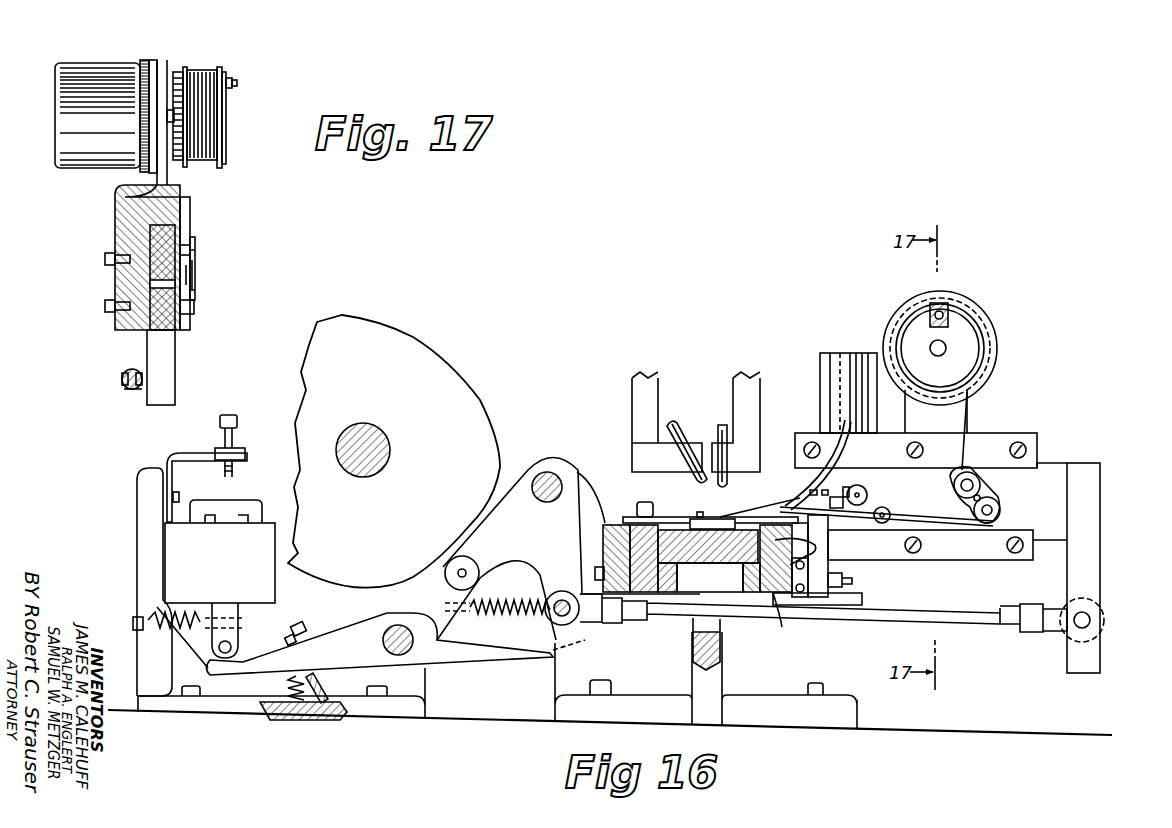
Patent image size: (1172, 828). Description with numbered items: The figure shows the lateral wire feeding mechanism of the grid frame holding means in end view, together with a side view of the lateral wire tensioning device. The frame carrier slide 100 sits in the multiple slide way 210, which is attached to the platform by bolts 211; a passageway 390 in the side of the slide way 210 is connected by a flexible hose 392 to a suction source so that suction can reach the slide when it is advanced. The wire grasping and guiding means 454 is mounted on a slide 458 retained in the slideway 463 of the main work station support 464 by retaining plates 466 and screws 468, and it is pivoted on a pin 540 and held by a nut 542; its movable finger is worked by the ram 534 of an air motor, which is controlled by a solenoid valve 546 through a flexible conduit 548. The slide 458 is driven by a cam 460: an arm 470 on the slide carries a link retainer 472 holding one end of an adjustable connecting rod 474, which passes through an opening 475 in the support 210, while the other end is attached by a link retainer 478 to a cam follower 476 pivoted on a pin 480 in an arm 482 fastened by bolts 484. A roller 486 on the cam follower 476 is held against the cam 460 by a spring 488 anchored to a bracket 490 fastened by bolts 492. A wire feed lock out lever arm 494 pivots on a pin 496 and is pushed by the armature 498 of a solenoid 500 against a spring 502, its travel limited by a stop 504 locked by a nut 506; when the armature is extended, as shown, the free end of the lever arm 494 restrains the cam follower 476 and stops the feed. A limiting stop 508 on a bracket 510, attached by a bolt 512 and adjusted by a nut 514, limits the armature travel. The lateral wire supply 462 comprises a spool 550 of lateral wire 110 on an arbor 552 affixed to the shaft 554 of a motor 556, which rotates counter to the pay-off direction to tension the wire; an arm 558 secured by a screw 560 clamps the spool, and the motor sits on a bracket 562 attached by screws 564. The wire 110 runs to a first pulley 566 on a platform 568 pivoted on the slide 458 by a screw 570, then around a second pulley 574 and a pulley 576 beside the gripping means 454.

In FIG. 16, the frame carrier slide 100 is at (729, 567).
In FIG. 17, the lateral wire 110 is at (196, 240).
In FIG. 16, the lateral wire 110 is at (981, 431).
In FIG. 16, the multiple slide way 210 is at (794, 617).
In FIG. 16, the bolts 211 is at (818, 685).
In FIG. 16, the passageway 390 is at (812, 555).
In FIG. 16, the flexible hose 392 is at (838, 560).
In FIG. 16, the wire grasping and guiding means 454 is at (776, 475).
In FIG. 17, the slide 458 is at (177, 232).
In FIG. 16, the slide 458 is at (1060, 462).
In FIG. 16, the cam 460 is at (394, 451).
In FIG. 17, the lateral wire supply 462 is at (206, 64).
In FIG. 16, the lateral wire supply 462 is at (990, 312).
In FIG. 17, the slideway 463 is at (167, 196).
In FIG. 16, the main work station support 464 is at (868, 635).
In FIG. 17, the retaining plates 466 is at (185, 200).
In FIG. 16, the retaining plates 466 is at (975, 452).
In FIG. 17, the screws 468 is at (183, 212).
In FIG. 16, the screws 468 is at (1010, 455).
In FIG. 17, the arm 470 is at (170, 362).
In FIG. 16, the arm 470 is at (1098, 490).
In FIG. 17, the link retainer 472 is at (130, 369).
In FIG. 16, the link retainer 472 is at (1092, 620).
In FIG. 17, the adjustable connecting rod 474 is at (128, 400).
In FIG. 16, the adjustable connecting rod 474 is at (953, 600).
In FIG. 16, the opening 475 is at (721, 623).
In FIG. 16, the cam follower 476 is at (512, 470).
In FIG. 16, the link retainer 478 is at (562, 600).
In FIG. 16, the pin 480 is at (550, 478).
In FIG. 16, the arm 482 is at (583, 492).
In FIG. 16, the bolts 484 is at (596, 567).
In FIG. 16, the roller 486 is at (479, 578).
In FIG. 16, the spring 488 is at (500, 614).
In FIG. 16, the bracket 490 is at (140, 533).
In FIG. 16, the bolts 492 is at (380, 695).
In FIG. 16, the wire feed lock out lever arm 494 is at (355, 641).
In FIG. 16, the pin 496 is at (390, 645).
In FIG. 16, the armature 498 is at (234, 630).
In FIG. 16, the solenoid 500 is at (220, 551).
In FIG. 16, the spring 502 is at (290, 688).
In FIG. 16, the stop 504 is at (307, 620).
In FIG. 16, the nut 506 is at (289, 641).
In FIG. 16, the limiting stop 508 is at (236, 433).
In FIG. 16, the bracket 510 is at (190, 455).
In FIG. 16, the bolt 512 is at (179, 496).
In FIG. 16, the nut 514 is at (242, 456).
In FIG. 16, the ram 534 is at (850, 493).
In FIG. 16, the pin 540 is at (868, 496).
In FIG. 16, the nut 542 is at (862, 494).
In FIG. 16, the solenoid valve 546 is at (865, 340).
In FIG. 16, the flexible conduit 548 is at (840, 422).
In FIG. 17, the spool 550 is at (219, 143).
In FIG. 16, the spool 550 is at (990, 348).
In FIG. 17, the arbor 552 is at (182, 70).
In FIG. 16, the arbor 552 is at (975, 362).
In FIG. 17, the shaft 554 is at (162, 73).
In FIG. 16, the shaft 554 is at (960, 348).
In FIG. 17, the motor 556 is at (110, 47).
In FIG. 16, the motor 556 is at (996, 334).
In FIG. 17, the arm 558 is at (228, 74).
In FIG. 16, the arm 558 is at (946, 315).
In FIG. 17, the screw 560 is at (237, 83).
In FIG. 16, the screw 560 is at (934, 318).
In FIG. 17, the bracket 562 is at (115, 200).
In FIG. 16, the bracket 562 is at (936, 411).
In FIG. 17, the screws 564 is at (104, 258).
In FIG. 16, the first pulley 566 is at (981, 482).
In FIG. 16, the platform 568 is at (999, 498).
In FIG. 16, the screw 570 is at (982, 498).
In FIG. 16, the second pulley 574 is at (1000, 512).
In FIG. 16, the pulley 576 is at (890, 517).